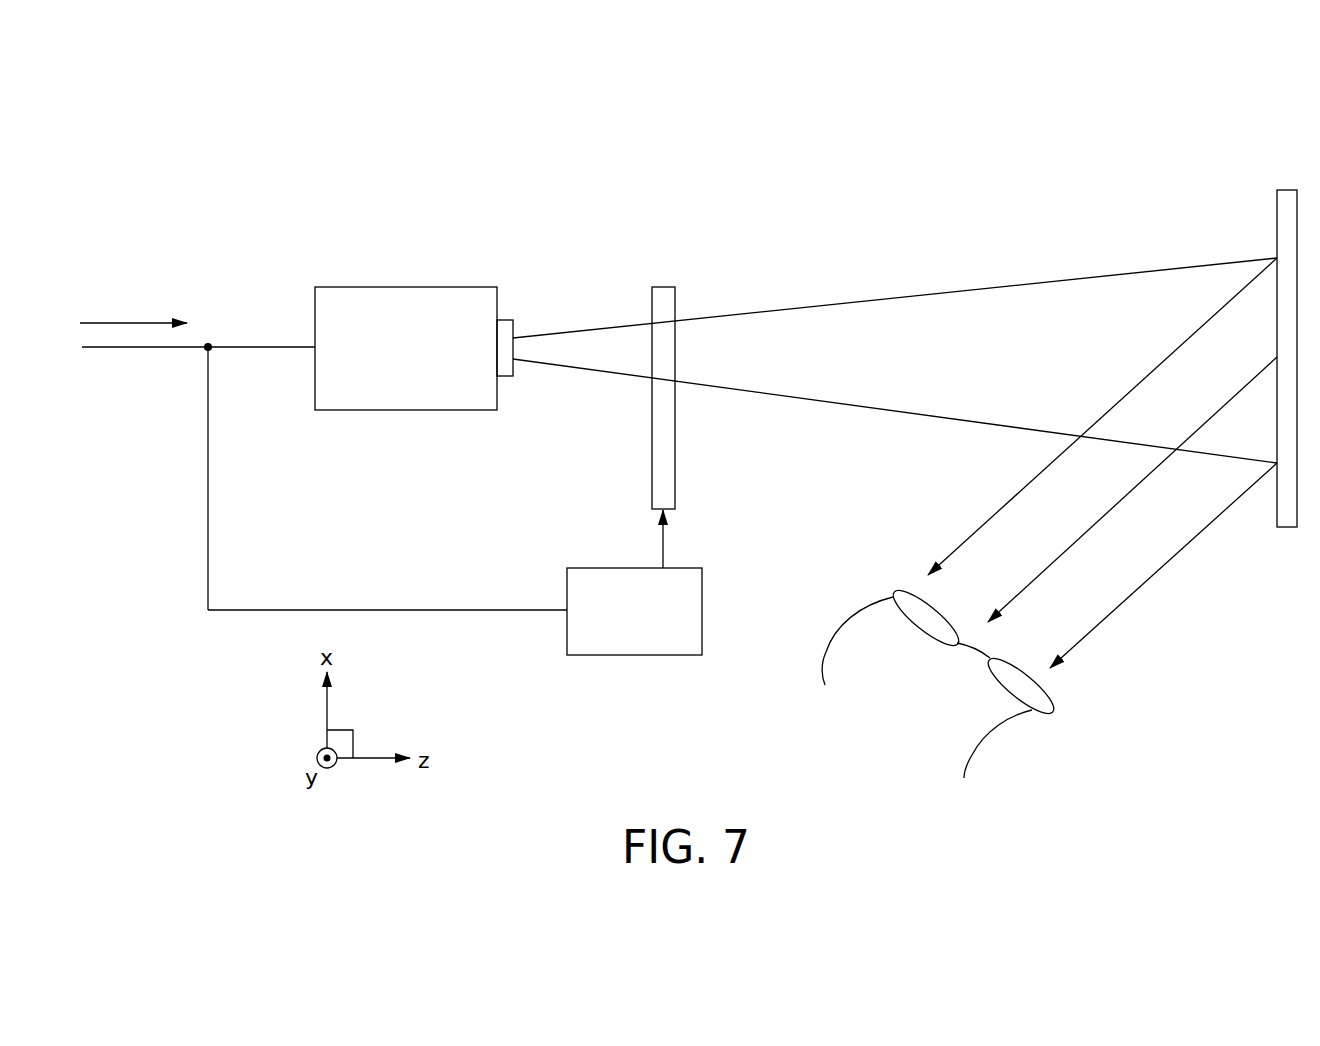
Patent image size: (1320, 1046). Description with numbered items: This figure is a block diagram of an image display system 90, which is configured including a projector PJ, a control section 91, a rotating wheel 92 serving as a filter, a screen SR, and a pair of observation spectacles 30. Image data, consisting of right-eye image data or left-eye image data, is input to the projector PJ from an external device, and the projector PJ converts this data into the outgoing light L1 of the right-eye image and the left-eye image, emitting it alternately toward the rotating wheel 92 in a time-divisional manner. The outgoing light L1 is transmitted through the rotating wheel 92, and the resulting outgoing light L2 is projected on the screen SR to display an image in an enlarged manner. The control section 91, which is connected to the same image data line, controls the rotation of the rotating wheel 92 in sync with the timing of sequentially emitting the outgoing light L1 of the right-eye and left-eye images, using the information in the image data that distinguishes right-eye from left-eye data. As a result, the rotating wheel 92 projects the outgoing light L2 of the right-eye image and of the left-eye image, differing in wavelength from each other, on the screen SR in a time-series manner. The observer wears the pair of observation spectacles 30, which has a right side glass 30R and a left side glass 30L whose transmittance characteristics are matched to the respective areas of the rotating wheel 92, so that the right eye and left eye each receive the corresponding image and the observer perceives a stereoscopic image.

The image display system 90 is at (1232, 105).
The rotating wheel 92 is at (664, 287).
The control section 91 is at (682, 567).
The pair of observation spectacles 30 is at (880, 728).
The left side glass 30L is at (917, 627).
The right side glass 30R is at (1002, 683).
The projector PJ is at (416, 287).
The screen SR is at (1288, 190).
The outgoing light L1 is at (545, 349).
The outgoing light L2 is at (688, 349).